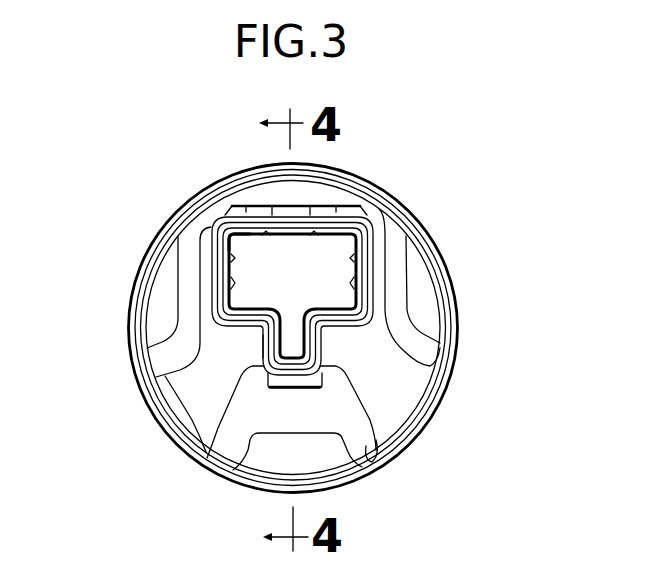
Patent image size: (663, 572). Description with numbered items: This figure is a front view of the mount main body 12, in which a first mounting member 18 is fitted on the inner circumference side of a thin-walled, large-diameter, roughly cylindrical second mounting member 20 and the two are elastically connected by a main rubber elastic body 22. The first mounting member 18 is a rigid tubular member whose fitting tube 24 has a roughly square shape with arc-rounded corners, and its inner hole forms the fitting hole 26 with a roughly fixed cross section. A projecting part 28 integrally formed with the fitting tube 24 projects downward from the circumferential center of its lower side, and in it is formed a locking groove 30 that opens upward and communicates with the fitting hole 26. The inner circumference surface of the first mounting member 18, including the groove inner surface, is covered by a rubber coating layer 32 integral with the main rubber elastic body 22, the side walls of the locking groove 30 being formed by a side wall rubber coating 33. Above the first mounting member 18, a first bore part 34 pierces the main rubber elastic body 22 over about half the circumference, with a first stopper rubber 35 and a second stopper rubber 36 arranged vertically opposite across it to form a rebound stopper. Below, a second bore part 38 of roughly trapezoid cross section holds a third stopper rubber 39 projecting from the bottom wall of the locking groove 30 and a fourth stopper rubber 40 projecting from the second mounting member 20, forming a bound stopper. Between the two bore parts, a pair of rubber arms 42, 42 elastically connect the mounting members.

The mount main body 12 is at (452, 233).
The first mounting member 18 is at (210, 299).
The second mounting member 20 is at (449, 289).
The main rubber elastic body 22 is at (433, 401).
The fitting tube 24 is at (220, 293).
The fitting hole 26 is at (231, 262).
The projecting part 28 is at (267, 343).
The locking groove 30 is at (307, 341).
The rubber coating layer 32 is at (250, 231).
The side wall rubber coating 33 is at (277, 352).
The first bore part 34 is at (180, 270).
The first stopper rubber 35 is at (322, 208).
The second stopper rubber 36 is at (263, 199).
The second bore part 38 is at (370, 457).
The third stopper rubber 39 is at (313, 383).
The fourth stopper rubber 40 is at (259, 452).
The rubber arm 42 is at (381, 372).